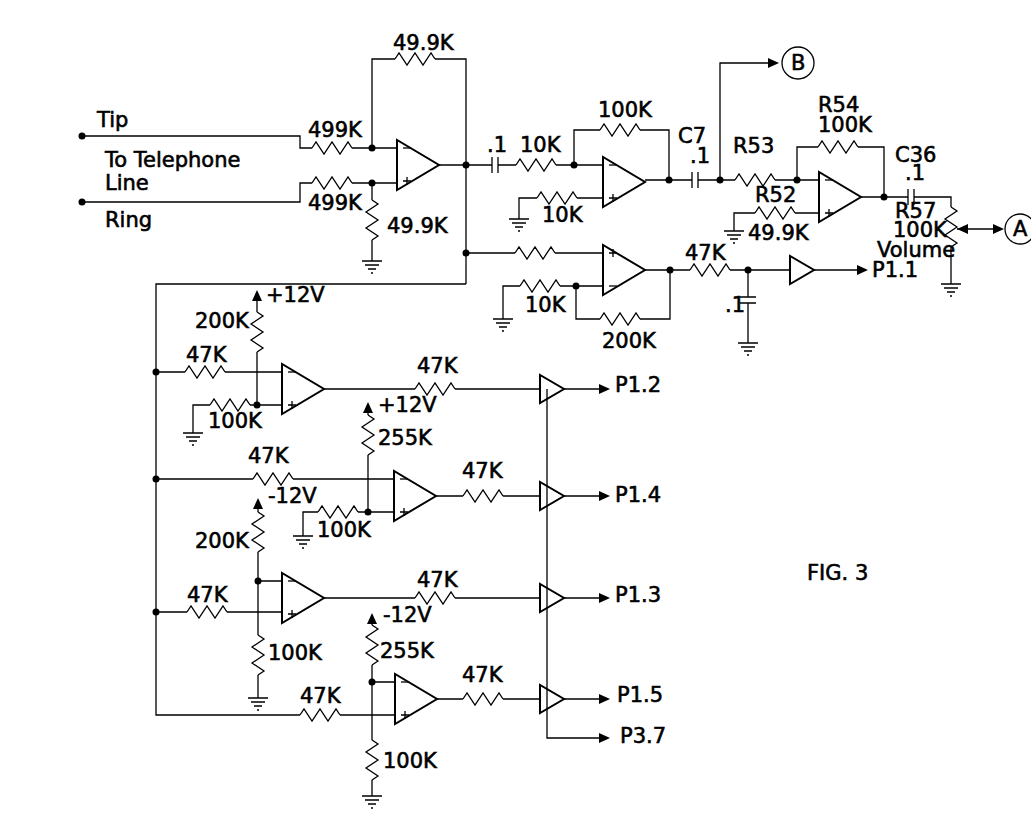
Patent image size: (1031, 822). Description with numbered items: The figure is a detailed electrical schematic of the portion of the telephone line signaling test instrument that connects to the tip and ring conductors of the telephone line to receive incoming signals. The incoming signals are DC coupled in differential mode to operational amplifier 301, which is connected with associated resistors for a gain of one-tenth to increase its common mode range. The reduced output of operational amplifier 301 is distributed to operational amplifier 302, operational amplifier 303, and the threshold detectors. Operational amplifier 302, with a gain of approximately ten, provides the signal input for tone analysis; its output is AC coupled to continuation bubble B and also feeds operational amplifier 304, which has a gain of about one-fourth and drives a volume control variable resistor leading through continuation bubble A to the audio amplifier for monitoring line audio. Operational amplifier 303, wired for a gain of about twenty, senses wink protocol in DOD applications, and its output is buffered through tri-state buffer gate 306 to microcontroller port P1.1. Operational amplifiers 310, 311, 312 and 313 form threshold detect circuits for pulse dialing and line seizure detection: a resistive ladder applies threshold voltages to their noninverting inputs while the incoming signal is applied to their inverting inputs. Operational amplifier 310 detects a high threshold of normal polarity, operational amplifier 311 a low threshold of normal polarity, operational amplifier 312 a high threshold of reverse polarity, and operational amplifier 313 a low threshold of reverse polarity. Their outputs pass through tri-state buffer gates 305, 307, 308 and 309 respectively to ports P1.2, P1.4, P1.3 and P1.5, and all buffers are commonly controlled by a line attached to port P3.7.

The operational amplifier 301 is at (419, 153).
The operational amplifier 302 is at (643, 189).
The operational amplifier 303 is at (635, 257).
The operational amplifier 304 is at (842, 208).
The tri-state buffer gate 305 is at (543, 376).
The tri-state buffer gate 306 is at (805, 275).
The tri-state buffer gate 307 is at (550, 488).
The tri-state buffer gate 308 is at (550, 590).
The tri-state buffer gate 309 is at (550, 691).
The operational amplifier 310 is at (306, 378).
The operational amplifier 311 is at (413, 482).
The operational amplifier 312 is at (304, 586).
The operational amplifier 313 is at (423, 709).